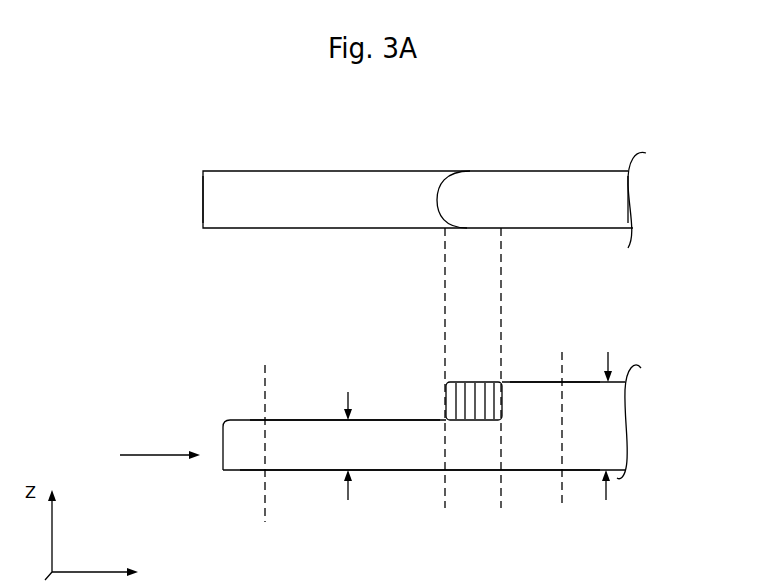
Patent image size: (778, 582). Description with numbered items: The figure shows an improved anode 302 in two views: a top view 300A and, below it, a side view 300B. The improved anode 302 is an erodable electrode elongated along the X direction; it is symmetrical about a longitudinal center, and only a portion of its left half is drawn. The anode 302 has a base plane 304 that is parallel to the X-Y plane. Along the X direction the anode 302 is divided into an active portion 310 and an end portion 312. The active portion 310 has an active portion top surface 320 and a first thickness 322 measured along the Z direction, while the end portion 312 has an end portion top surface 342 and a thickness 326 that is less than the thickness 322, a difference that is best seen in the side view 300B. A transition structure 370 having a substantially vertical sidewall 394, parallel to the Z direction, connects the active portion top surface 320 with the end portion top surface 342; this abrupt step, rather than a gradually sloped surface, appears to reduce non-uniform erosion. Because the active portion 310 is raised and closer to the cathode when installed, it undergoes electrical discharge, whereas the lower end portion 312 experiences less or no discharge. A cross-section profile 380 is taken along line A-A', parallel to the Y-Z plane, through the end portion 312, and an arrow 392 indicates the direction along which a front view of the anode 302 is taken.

The top view 300A is at (170, 100).
The improved anode 302 is at (549, 82).
The cross-section profile 380 is at (438, 190).
The end portion 312 is at (285, 323).
The active portion 310 is at (580, 327).
The side view 300B is at (155, 406).
The end portion top surface 342 is at (297, 420).
The transition structure 370 is at (445, 406).
The vertical sidewall 394 is at (480, 395).
The active portion top surface 320 is at (528, 382).
The arrow 392 is at (142, 454).
The thickness of end portion 326 is at (348, 457).
The base plane 304 is at (392, 473).
The first thickness 322 is at (608, 443).